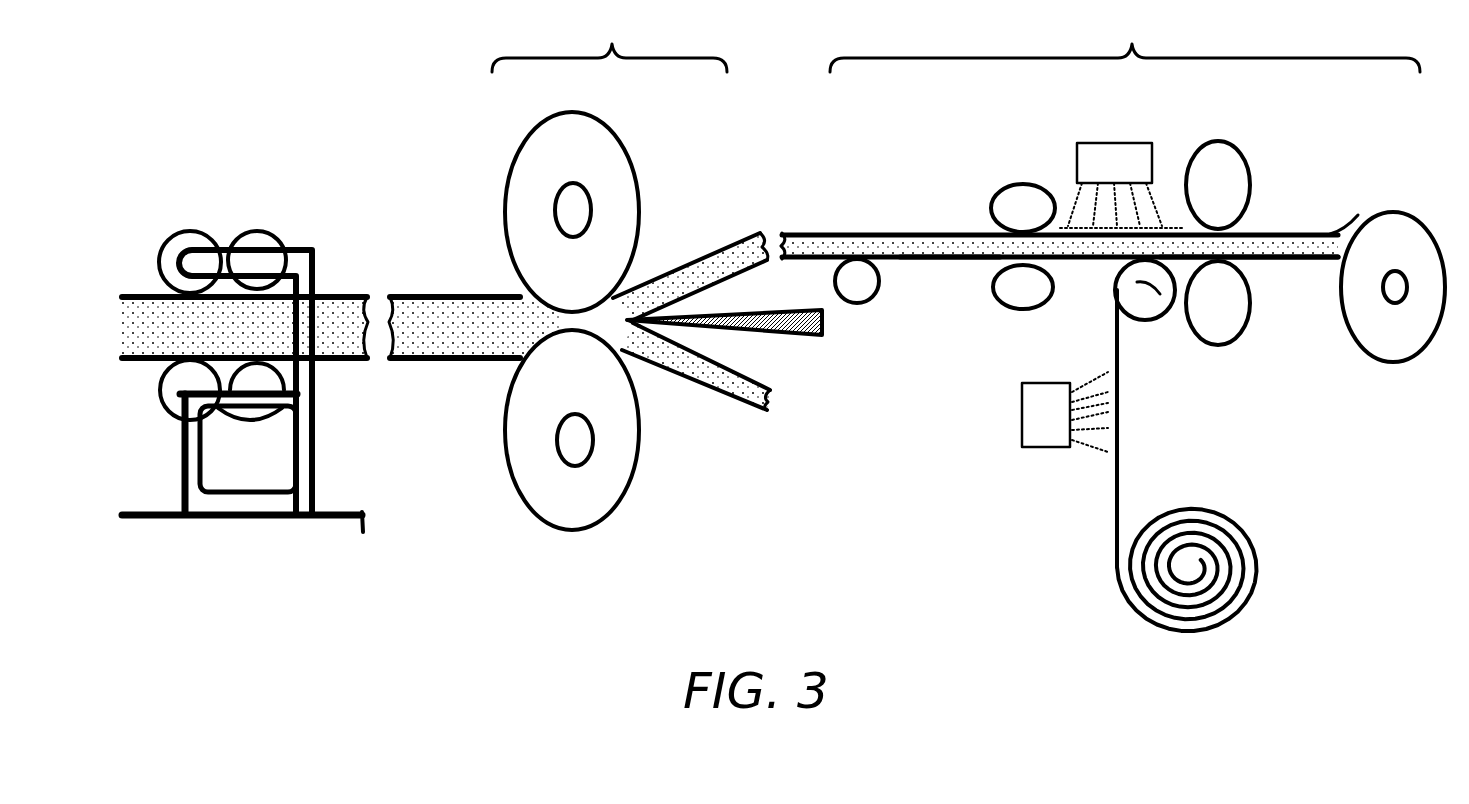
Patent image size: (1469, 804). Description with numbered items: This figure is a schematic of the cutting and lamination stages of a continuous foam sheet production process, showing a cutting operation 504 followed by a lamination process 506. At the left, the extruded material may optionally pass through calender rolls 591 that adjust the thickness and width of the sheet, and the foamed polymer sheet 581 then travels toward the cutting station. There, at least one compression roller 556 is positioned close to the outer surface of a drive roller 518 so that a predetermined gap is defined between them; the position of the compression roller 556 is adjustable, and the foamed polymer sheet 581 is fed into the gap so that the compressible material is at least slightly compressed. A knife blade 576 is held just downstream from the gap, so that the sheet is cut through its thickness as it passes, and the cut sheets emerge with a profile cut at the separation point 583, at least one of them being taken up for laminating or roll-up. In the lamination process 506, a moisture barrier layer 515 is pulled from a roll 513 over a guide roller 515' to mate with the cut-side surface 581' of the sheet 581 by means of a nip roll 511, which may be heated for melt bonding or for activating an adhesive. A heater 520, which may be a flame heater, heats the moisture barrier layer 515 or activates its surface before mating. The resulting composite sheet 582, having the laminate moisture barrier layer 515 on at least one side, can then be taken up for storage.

The cutting operation 504 is at (609, 40).
The lamination process 506 is at (1125, 40).
The nip roll 511 is at (1242, 178).
The roll 513 is at (1228, 517).
The moisture barrier layer 515 is at (1071, 428).
The surface of moisture barrier layer 515' is at (1093, 317).
The drive roller 518 is at (532, 443).
The heater 520 is at (1037, 410).
The compression roller 556 is at (530, 188).
The knife blade 576 is at (805, 326).
The foamed polymer sheet 581 is at (740, 324).
The cut-side surface of sheet 581' is at (950, 300).
The composite sheet 582 is at (1305, 258).
The separation point 583 is at (645, 338).
The calender rolls 591 is at (206, 230).